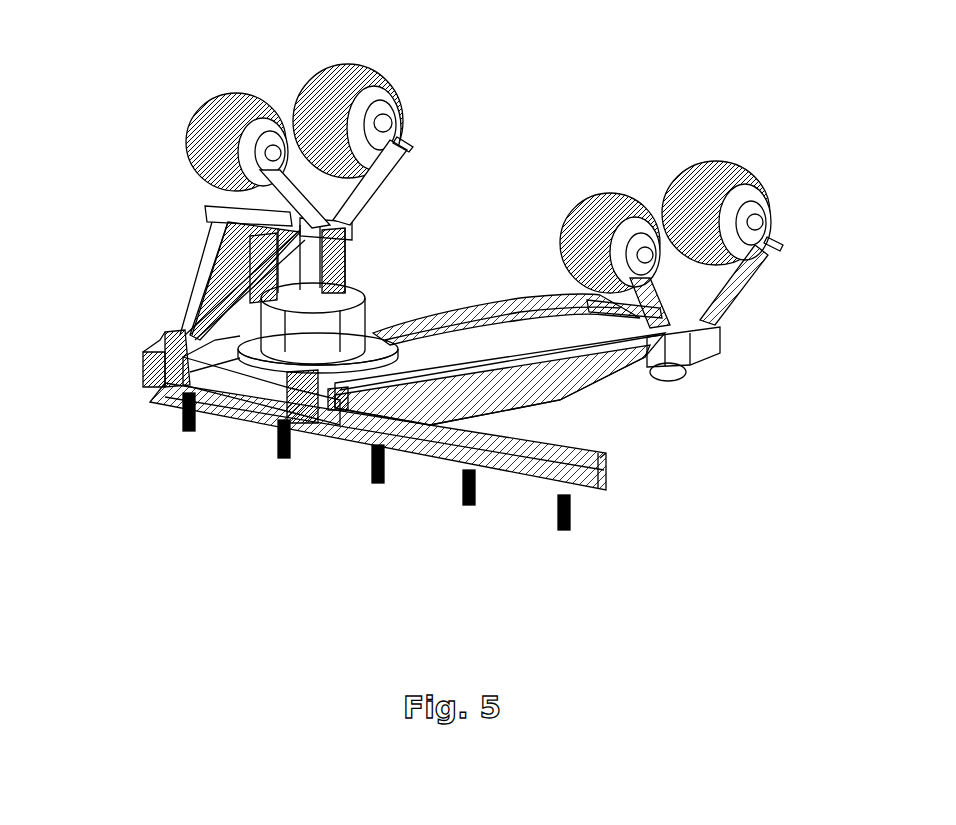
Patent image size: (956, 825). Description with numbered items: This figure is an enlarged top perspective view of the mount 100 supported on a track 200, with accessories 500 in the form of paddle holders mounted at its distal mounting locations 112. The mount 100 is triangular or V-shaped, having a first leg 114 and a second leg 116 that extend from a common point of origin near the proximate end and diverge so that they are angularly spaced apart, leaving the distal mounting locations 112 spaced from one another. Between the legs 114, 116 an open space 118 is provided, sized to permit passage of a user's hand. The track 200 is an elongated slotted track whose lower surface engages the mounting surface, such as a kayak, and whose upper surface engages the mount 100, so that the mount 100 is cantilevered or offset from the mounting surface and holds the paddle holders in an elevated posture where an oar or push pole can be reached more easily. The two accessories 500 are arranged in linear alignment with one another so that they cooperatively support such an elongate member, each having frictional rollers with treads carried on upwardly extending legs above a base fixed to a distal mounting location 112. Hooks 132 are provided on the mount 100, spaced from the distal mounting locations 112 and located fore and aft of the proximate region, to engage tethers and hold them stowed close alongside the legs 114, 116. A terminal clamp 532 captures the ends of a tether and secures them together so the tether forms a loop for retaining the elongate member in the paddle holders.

The mount 100 is at (622, 50).
The distal mounting location 112 is at (368, 222).
The first leg 114 is at (345, 248).
The second leg 116 is at (600, 375).
The open space 118 is at (500, 155).
The hook 132 is at (166, 402).
The track 200 is at (598, 438).
The accessory 500 is at (407, 78).
The terminal clamp 532 is at (150, 390).